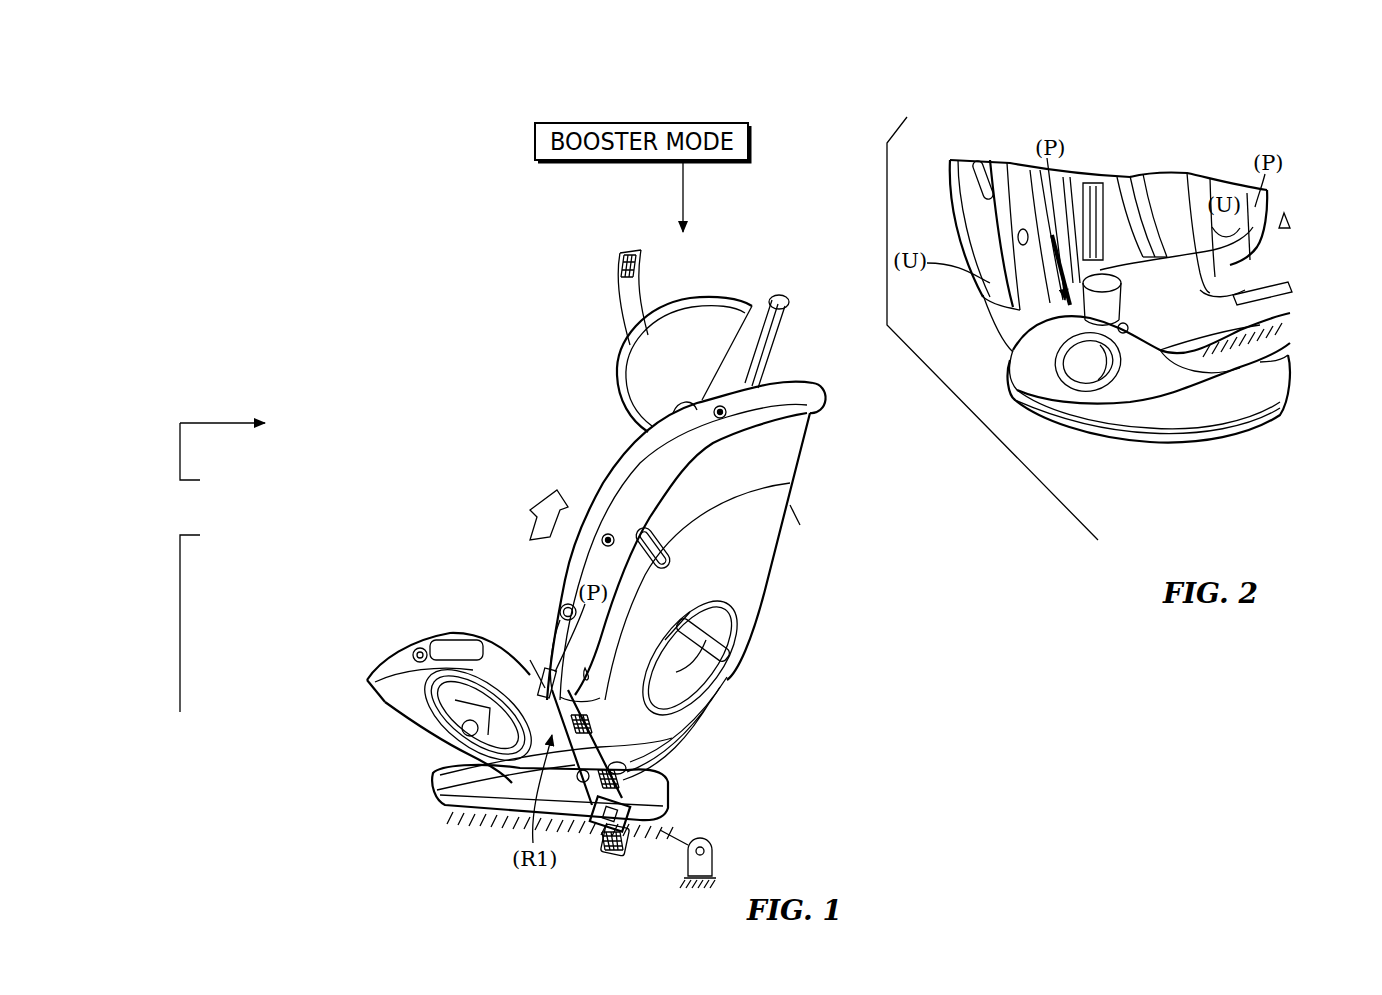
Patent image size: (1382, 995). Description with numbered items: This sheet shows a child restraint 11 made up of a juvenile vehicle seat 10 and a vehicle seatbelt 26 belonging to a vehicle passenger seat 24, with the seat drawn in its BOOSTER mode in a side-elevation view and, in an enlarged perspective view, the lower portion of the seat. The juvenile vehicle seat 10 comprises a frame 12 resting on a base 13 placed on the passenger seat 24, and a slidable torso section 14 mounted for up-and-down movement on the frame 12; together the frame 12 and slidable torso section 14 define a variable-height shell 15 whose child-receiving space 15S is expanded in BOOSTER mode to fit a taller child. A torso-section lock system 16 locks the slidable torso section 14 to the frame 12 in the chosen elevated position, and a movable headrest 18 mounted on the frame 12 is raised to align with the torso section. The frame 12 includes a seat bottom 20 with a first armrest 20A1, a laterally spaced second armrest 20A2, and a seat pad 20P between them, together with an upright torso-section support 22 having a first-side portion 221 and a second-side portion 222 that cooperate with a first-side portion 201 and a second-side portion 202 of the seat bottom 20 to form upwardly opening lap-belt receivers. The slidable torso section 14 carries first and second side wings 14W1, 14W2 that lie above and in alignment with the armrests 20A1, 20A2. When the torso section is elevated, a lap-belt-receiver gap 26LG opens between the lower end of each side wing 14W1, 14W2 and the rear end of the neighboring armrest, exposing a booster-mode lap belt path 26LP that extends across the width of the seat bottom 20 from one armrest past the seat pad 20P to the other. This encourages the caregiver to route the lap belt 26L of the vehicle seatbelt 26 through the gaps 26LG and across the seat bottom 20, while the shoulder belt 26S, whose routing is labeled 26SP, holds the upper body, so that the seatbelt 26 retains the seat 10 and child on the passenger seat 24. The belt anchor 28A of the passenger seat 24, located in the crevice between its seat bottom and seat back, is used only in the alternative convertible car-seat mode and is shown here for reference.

In FIG. 1, the juvenile vehicle seat 10 is at (948, 726).
In FIG. 2, the juvenile vehicle seat 10 is at (1228, 156).
In FIG. 1, the child restraint 11 is at (1100, 790).
In FIG. 1, the frame 12 is at (387, 712).
In FIG. 2, the frame 12 is at (1247, 423).
In FIG. 1, the base 13 is at (437, 776).
In FIG. 1, the slidable torso section 14 is at (593, 487).
In FIG. 2, the slidable torso section 14 is at (1165, 163).
In FIG. 1, the first side wing 14W1 is at (522, 655).
In FIG. 2, the first side wing 14W1 is at (1207, 172).
In FIG. 2, the second side wing 14W2 is at (1013, 165).
In FIG. 1, the variable-height shell 15 is at (347, 505).
In FIG. 1, the child-receiving space 15S is at (615, 462).
In FIG. 2, the child-receiving space 15S is at (1271, 232).
In FIG. 1, the torso-section lock system 16 is at (874, 352).
In FIG. 1, the movable headrest 18 is at (612, 359).
In FIG. 1, the seat bottom 20 is at (398, 730).
In FIG. 1, the first armrest 20A1 is at (440, 642).
In FIG. 2, the second armrest 20A2 is at (1100, 244).
In FIG. 2, the seat pad 20P is at (1270, 335).
In FIG. 1, the upright torso-section support 22 is at (743, 658).
In FIG. 1, the vehicle passenger seat 24 is at (227, 836).
In FIG. 1, the vehicle seatbelt 26 is at (800, 724).
In FIG. 1, the shoulder belt 26S is at (614, 270).
In FIG. 1, the lap belt 26L is at (1013, 685).
In FIG. 1, the lap-belt-receiver gap 26LG is at (428, 553).
In FIG. 2, the booster-mode lap belt path 26LP is at (1302, 473).
In FIG. 2, the shoulder belt path 26SP is at (1130, 173).
In FIG. 1, the belt anchor 28A is at (690, 868).
In FIG. 1, the first-side portion of seat bottom 201 is at (502, 752).
In FIG. 2, the second-side portion of seat bottom 202 is at (1060, 305).
In FIG. 1, the first-side portion of upright torso-section support 221 is at (575, 703).
In FIG. 2, the first-side portion of upright torso-section support 221 is at (1268, 303).
In FIG. 2, the second-side portion of upright torso-section support 222 is at (1033, 313).